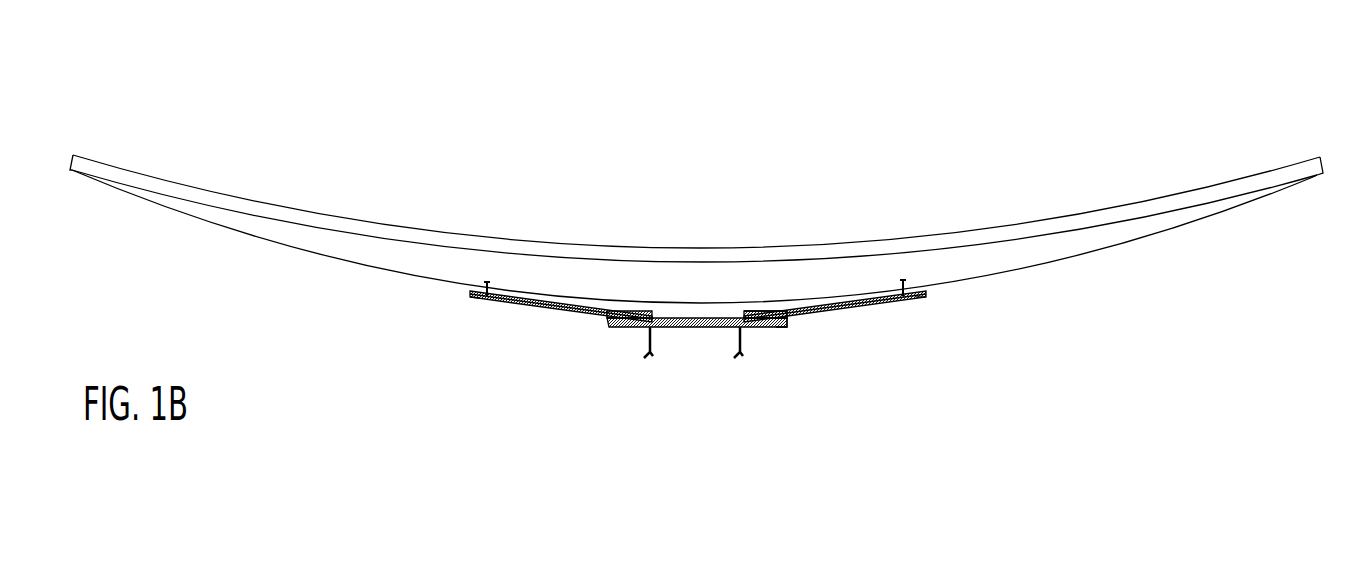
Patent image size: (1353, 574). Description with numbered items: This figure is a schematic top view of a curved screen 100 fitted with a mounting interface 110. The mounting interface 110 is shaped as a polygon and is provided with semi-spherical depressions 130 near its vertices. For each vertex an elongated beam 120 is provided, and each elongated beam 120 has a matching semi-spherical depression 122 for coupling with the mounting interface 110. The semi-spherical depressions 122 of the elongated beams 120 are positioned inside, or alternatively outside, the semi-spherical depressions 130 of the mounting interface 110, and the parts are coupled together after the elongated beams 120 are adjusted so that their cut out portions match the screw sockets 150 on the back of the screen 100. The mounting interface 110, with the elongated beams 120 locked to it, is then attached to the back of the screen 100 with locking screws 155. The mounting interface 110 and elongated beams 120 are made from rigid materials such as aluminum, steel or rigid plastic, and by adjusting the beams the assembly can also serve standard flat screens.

The curved screen 100 is at (152, 145).
The mounting interface 110 is at (677, 328).
The elongated beam 120 is at (872, 309).
The semi-spherical depression 122 is at (756, 310).
The semi-spherical depression 130 is at (780, 328).
The screw socket 150 is at (490, 286).
The locking screw 155 is at (487, 300).